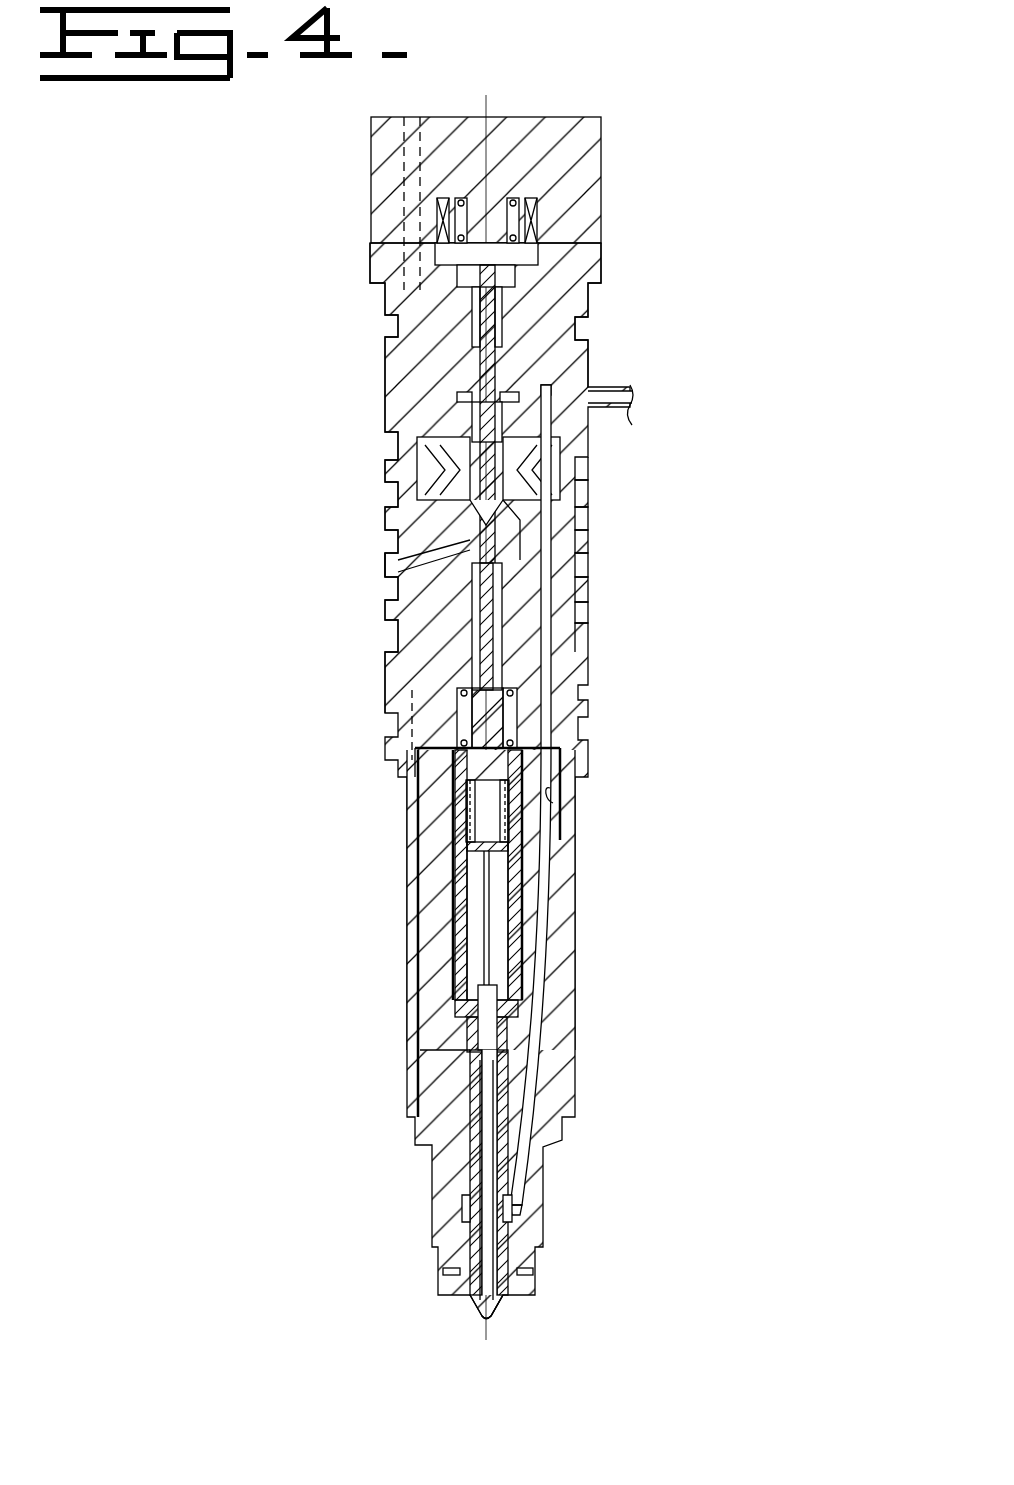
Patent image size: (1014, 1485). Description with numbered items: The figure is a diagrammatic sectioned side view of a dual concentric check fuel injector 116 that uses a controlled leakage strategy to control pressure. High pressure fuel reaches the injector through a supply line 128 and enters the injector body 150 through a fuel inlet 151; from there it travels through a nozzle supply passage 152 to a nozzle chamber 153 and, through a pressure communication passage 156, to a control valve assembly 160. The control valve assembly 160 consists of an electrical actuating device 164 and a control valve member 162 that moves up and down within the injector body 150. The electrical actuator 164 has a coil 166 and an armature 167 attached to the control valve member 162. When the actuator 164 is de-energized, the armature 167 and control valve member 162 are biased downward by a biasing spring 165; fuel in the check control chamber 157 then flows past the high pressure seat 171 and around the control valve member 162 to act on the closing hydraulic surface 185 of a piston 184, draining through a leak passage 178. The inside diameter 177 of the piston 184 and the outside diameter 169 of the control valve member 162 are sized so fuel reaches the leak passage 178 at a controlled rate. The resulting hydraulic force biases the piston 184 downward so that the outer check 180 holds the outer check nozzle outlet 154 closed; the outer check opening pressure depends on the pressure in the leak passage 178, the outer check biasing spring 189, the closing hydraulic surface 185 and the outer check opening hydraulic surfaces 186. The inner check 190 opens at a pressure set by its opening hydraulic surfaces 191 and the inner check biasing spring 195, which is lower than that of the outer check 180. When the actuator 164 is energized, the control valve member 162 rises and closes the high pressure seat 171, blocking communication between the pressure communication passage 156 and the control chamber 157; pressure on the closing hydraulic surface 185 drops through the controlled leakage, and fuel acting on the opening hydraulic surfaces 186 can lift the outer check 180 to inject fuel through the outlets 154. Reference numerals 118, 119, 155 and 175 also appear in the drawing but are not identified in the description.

The fuel injector 116 is at (352, 988).
The nozzle tip 118 is at (480, 1316).
The valve needle 119 is at (503, 1178).
The supply line 128 is at (636, 401).
The injector body 150 is at (590, 637).
The fuel inlet 151 is at (580, 406).
The nozzle supply passage 152 is at (553, 803).
The nozzle chamber 153 is at (512, 1222).
The outer check nozzle outlet 154 is at (510, 1300).
The nozzle orifice 155 is at (497, 1318).
The pressure communication passage 156 is at (541, 385).
The check control chamber 157 is at (503, 448).
The control valve assembly 160 is at (428, 352).
The control valve member 162 is at (500, 352).
The electrical actuating device 164 is at (412, 221).
The biasing spring 165 is at (524, 200).
The coil 166 is at (540, 222).
The armature 167 is at (528, 268).
The outside diameter 169 is at (475, 517).
The high pressure seat 171 is at (470, 415).
The body wall 175 is at (398, 560).
The inside diameter 177 is at (505, 527).
The leak passage 178 is at (470, 553).
The outer check 180 is at (470, 1097).
The piston 184 is at (505, 532).
The closing hydraulic surface 185 is at (465, 447).
The outer check opening hydraulic surfaces 186 is at (470, 1210).
The outer check biasing spring 189 is at (467, 728).
The inner check 190 is at (505, 1073).
The inner check opening hydraulic surfaces 191 is at (503, 1140).
The inner check biasing spring 195 is at (503, 825).